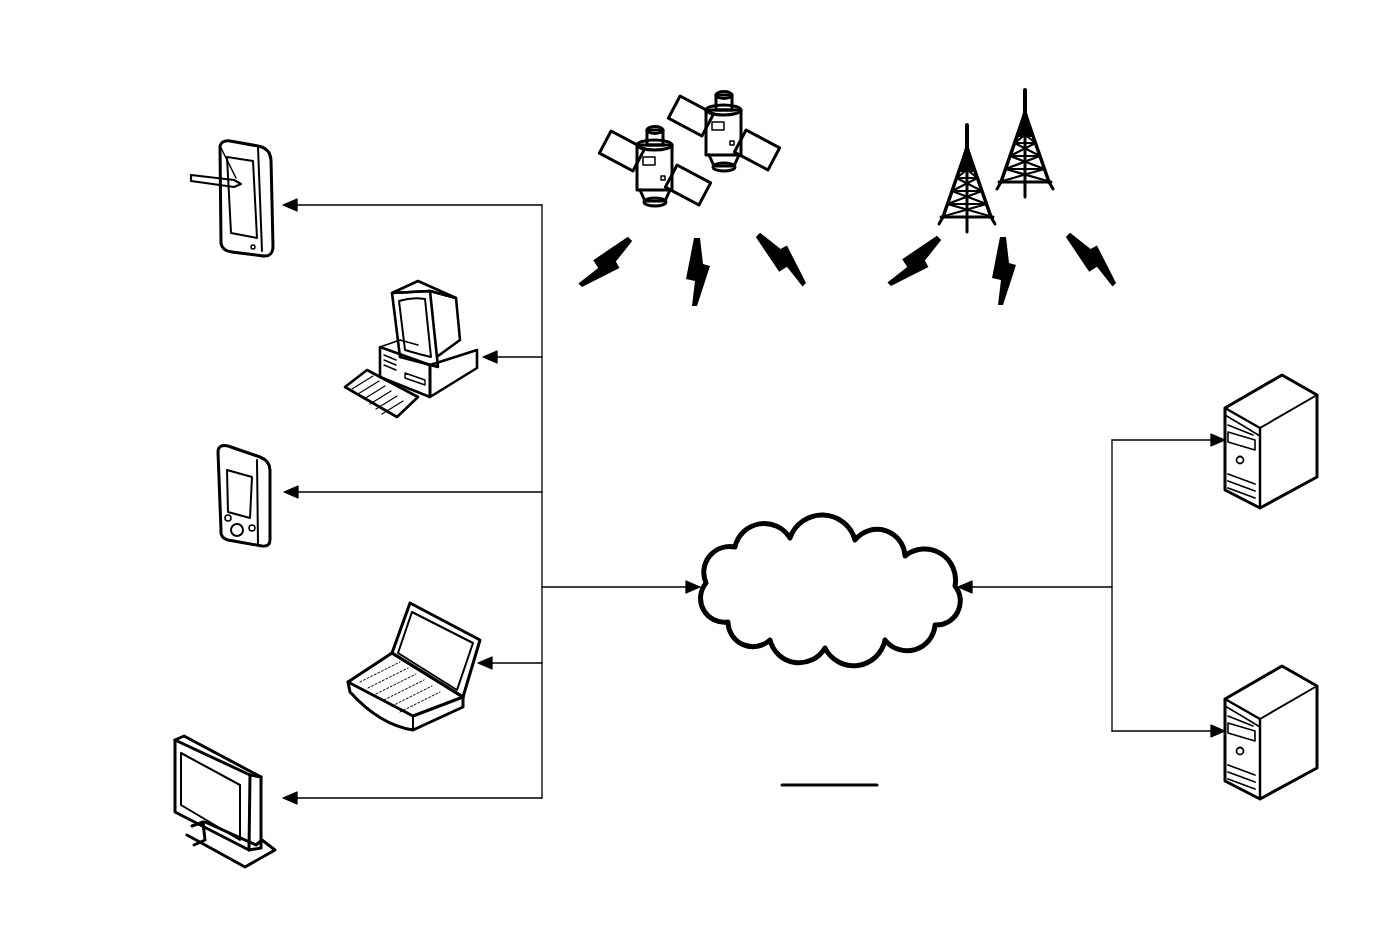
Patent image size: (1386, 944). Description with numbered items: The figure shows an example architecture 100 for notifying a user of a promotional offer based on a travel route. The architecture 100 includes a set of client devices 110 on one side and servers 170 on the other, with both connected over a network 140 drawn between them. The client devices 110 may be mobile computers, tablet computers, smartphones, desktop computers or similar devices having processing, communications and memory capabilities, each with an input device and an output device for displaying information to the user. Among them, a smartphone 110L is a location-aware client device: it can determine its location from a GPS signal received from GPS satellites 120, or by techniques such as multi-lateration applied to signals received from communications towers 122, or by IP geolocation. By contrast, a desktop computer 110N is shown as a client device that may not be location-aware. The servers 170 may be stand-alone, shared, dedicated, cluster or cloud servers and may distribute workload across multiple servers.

The architecture 100 is at (815, 726).
The client devices 110 is at (291, 71).
The desktop computer 110N is at (382, 324).
The smartphone 110L is at (295, 540).
The GPS satellites 120 is at (632, 71).
The communications towers 122 is at (891, 71).
The network 140 is at (815, 585).
The servers 170 is at (1206, 71).